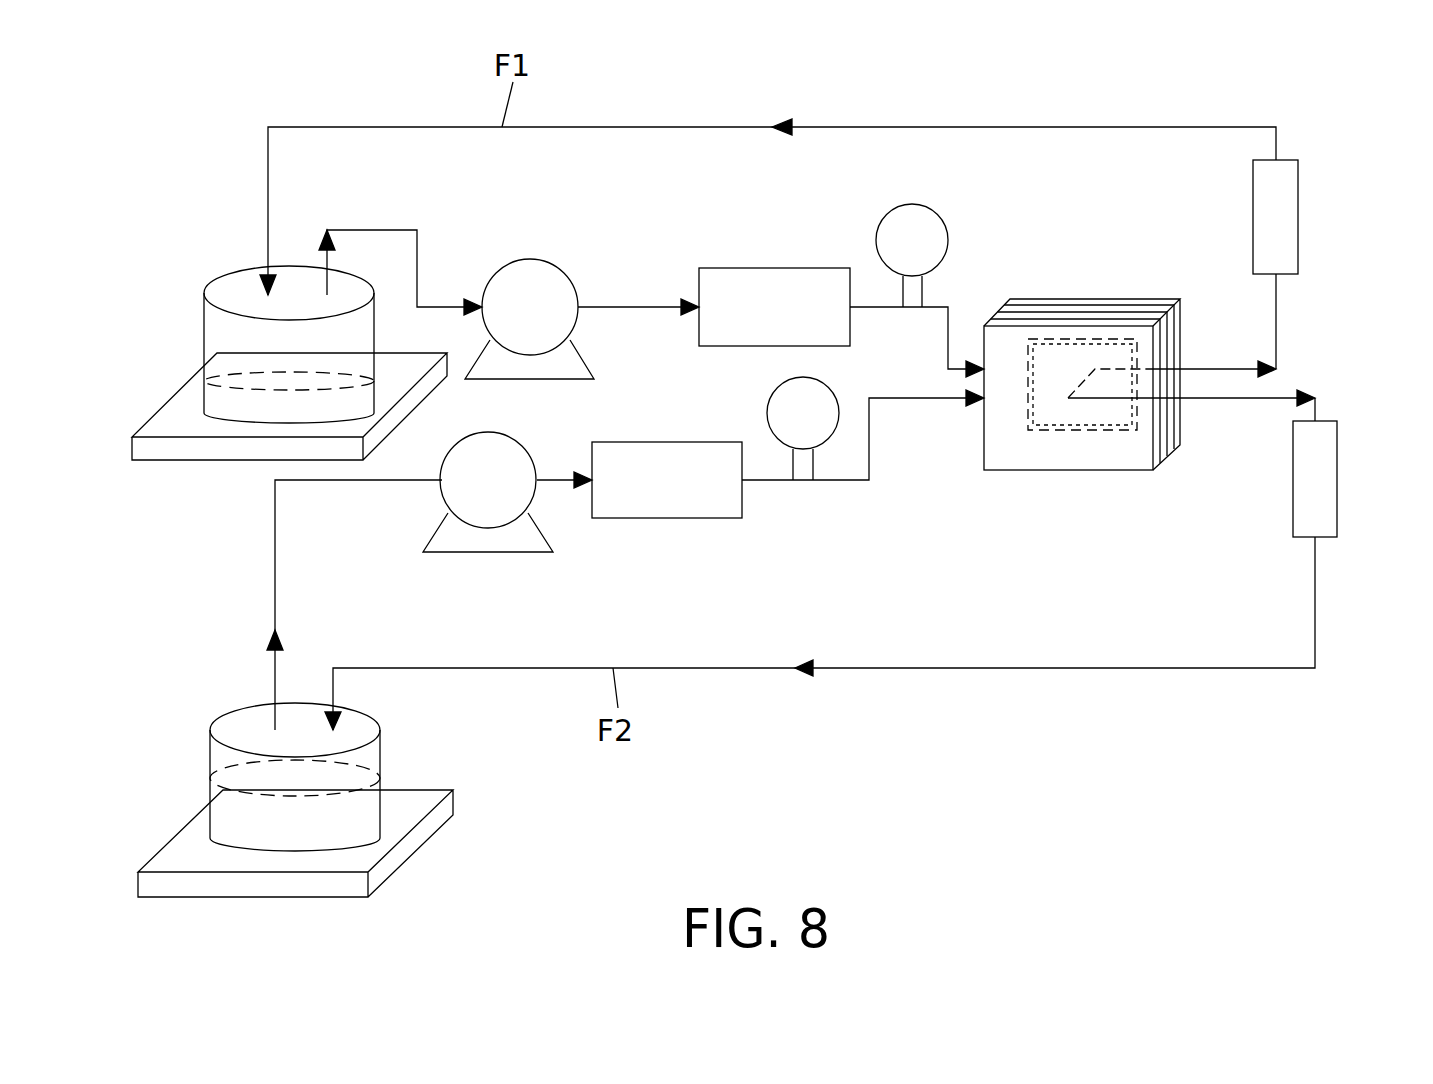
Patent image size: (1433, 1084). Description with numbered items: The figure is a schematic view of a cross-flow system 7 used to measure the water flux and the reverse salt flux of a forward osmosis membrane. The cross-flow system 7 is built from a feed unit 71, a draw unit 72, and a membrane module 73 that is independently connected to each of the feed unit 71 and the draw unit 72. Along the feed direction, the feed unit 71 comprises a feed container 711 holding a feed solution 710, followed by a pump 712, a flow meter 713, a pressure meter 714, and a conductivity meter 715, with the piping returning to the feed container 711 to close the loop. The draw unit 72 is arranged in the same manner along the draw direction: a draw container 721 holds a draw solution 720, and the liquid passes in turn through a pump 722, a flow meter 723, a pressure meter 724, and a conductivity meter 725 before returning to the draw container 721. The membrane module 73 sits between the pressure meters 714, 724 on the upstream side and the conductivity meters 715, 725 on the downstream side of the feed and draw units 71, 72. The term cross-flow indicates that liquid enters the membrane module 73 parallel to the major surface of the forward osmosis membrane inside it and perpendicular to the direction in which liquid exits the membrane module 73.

The cross-flow system 7 is at (203, 207).
The feed unit 71 is at (203, 293).
The feed solution 710 is at (217, 401).
The feed container 711 is at (204, 333).
The pump 712 is at (528, 259).
The flow meter 713 is at (774, 268).
The pressure meter 714 is at (939, 216).
The conductivity meter 715 is at (1300, 216).
The draw unit 72 is at (210, 722).
The draw solution 720 is at (235, 804).
The draw container 721 is at (210, 753).
The pump 722 is at (489, 553).
The flow meter 723 is at (667, 519).
The pressure meter 724 is at (803, 475).
The conductivity meter 725 is at (1340, 478).
The membrane module 73 is at (1071, 484).